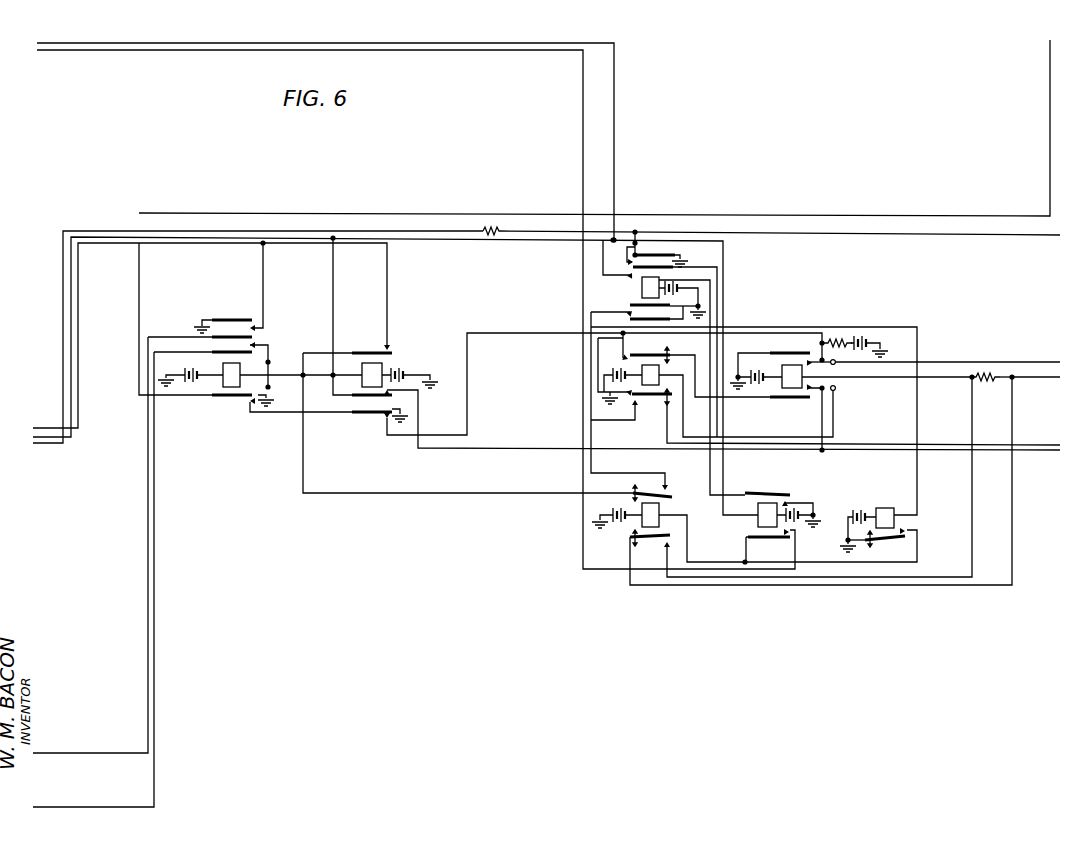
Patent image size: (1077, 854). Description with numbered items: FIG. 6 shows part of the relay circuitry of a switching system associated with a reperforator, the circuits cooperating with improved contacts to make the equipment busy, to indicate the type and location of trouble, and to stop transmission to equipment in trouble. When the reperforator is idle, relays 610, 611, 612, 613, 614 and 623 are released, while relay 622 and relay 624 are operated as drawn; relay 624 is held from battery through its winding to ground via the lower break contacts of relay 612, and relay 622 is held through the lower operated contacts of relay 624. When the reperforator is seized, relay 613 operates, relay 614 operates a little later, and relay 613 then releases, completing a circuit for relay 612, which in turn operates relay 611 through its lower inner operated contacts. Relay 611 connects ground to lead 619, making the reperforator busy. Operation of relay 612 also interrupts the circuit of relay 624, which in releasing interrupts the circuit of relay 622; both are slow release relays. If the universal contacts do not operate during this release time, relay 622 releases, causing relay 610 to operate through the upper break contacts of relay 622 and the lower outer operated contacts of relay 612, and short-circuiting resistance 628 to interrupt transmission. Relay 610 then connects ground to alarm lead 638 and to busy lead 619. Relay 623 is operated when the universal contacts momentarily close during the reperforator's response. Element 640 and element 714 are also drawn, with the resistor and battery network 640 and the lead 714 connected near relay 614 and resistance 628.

The relay 610 is at (233, 390).
The relay 611 is at (383, 367).
The relay 612 is at (641, 285).
The relay 613 is at (648, 390).
The relay 614 is at (788, 391).
The busy or test lead 619 is at (802, 201).
The slow release relay 622 is at (666, 498).
The relay 623 is at (757, 515).
The slow release relay 624 is at (878, 507).
The resistance 628 is at (986, 384).
The alarm lead 638 is at (155, 578).
The resistor and battery 640 is at (840, 340).
The conductor 714 is at (1022, 380).